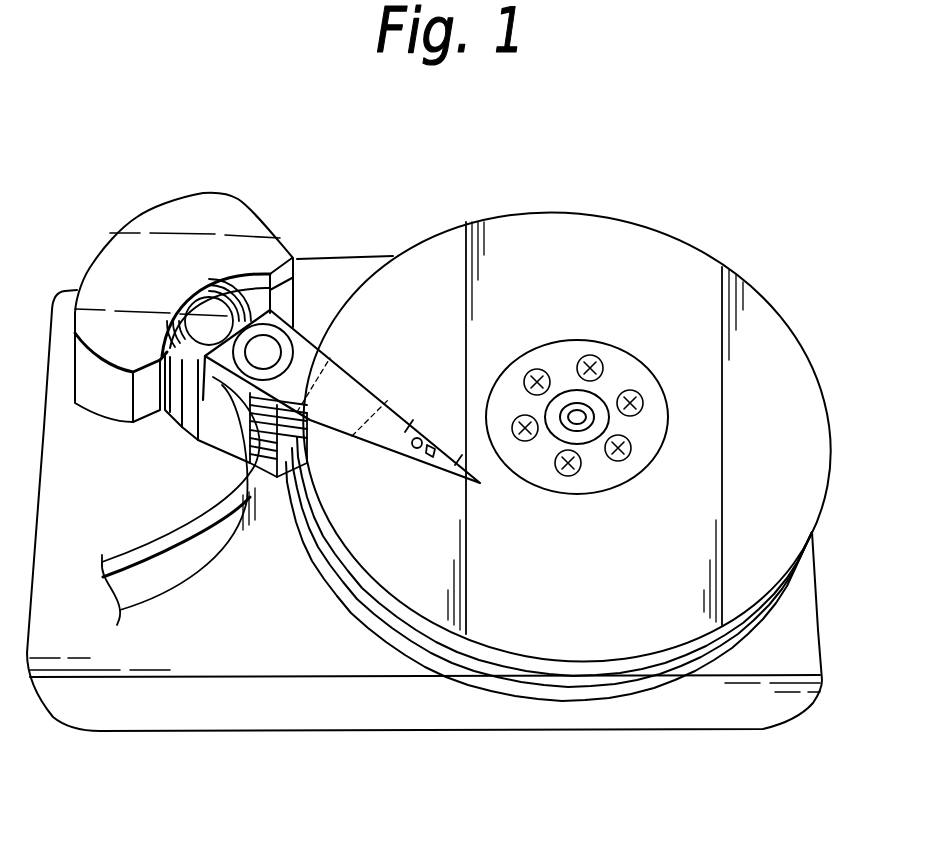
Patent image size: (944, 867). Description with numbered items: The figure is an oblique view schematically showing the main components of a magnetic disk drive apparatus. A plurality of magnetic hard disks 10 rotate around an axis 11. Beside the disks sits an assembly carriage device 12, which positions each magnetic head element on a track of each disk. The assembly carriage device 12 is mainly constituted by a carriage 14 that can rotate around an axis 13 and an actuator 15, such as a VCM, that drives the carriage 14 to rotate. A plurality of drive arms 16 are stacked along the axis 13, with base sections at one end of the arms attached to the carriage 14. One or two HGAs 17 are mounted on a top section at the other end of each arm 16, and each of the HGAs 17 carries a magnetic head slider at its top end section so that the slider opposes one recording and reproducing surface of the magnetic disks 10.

The magnetic hard disks 10 is at (792, 301).
The axis 11 is at (585, 415).
The assembly carriage device 12 is at (128, 343).
The axis 13 is at (266, 352).
The carriage 14 is at (207, 398).
The actuator 15 is at (167, 393).
The drive arms 16 is at (330, 383).
The HGAs 17 is at (452, 467).